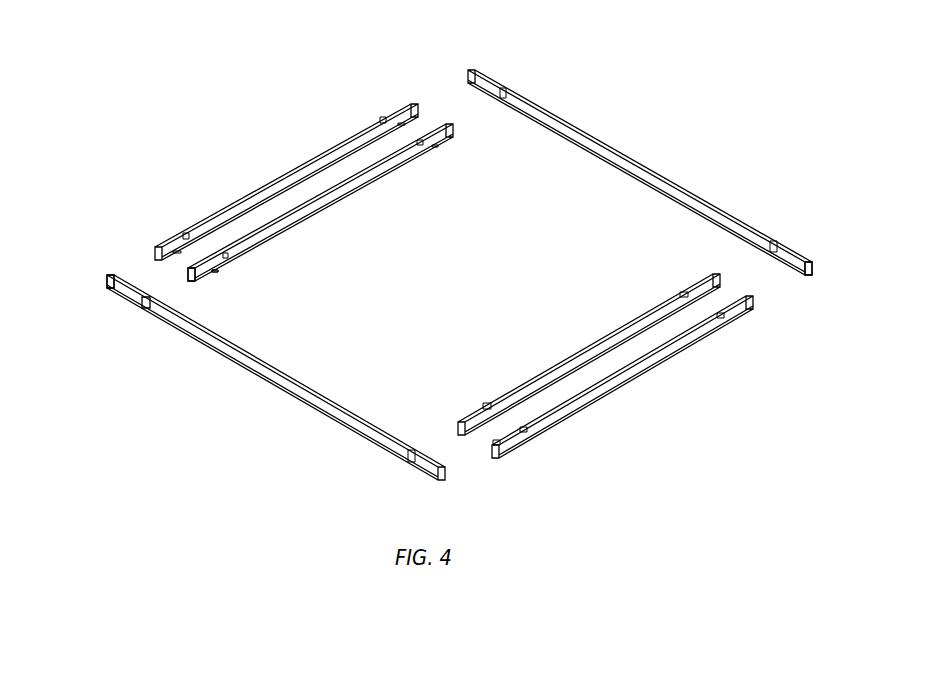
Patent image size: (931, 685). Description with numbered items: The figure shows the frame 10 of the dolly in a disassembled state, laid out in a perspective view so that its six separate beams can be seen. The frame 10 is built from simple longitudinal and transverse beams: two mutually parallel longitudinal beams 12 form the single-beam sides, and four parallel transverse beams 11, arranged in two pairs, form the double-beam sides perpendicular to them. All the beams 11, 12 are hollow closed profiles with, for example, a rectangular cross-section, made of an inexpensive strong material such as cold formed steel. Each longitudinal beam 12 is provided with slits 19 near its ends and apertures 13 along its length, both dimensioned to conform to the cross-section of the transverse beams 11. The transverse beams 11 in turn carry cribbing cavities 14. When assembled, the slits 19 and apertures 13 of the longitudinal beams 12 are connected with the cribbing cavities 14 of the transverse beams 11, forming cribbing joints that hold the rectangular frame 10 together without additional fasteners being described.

The frame 10 is at (184, 131).
The transverse beam 11 is at (454, 281).
The longitudinal beam 12 is at (428, 275).
The aperture 13 is at (140, 310).
The cribbing cavity 14 is at (215, 276).
The slit 19 is at (113, 273).